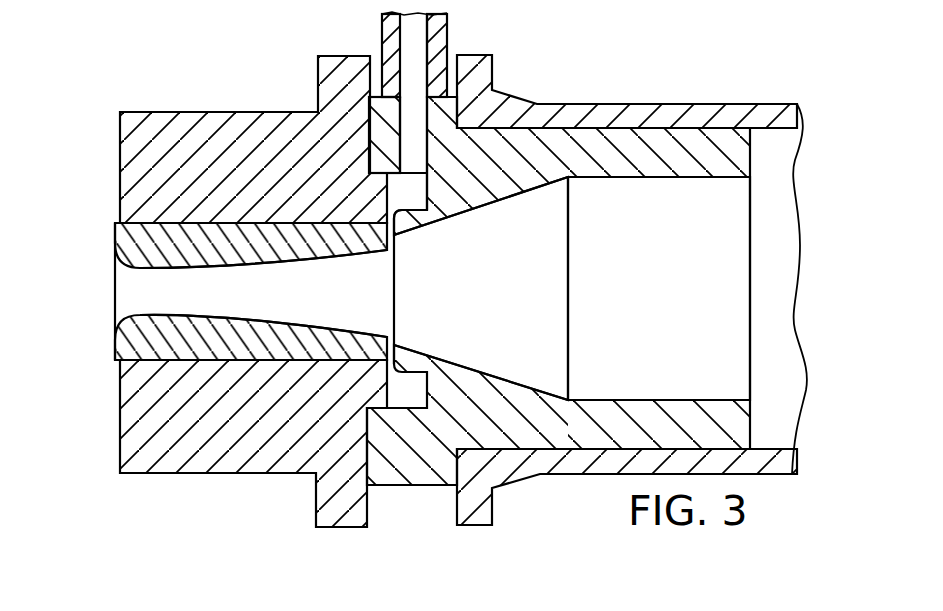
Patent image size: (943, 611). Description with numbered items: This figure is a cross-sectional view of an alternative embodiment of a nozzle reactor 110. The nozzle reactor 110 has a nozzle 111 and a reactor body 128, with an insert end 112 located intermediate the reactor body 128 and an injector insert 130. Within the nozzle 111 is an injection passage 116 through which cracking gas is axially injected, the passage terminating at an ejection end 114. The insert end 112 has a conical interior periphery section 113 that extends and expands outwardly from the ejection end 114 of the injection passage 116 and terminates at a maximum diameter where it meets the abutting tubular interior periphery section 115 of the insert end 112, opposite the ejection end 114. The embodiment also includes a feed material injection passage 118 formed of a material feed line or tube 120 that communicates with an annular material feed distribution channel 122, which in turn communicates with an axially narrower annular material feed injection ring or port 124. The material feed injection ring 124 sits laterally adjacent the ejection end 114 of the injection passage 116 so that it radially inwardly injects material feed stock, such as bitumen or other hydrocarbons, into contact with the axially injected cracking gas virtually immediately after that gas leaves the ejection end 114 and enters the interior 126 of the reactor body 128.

The nozzle reactor 110 is at (284, 520).
The nozzle 111 is at (158, 101).
The insert end 112 is at (385, 127).
The conical interior periphery section 113 is at (497, 386).
The ejection end 114 is at (396, 335).
The tubular interior periphery section 115 is at (675, 182).
The injection passage 116 is at (140, 315).
The feed material injection passage 118 is at (400, 160).
The material feed line or tube 120 is at (383, 43).
The annular material feed distribution channel 122 is at (393, 197).
The material feed injection ring or port 124 is at (395, 236).
The interior 126 is at (470, 283).
The reactor body 128 is at (605, 105).
The injector insert 130 is at (155, 249).